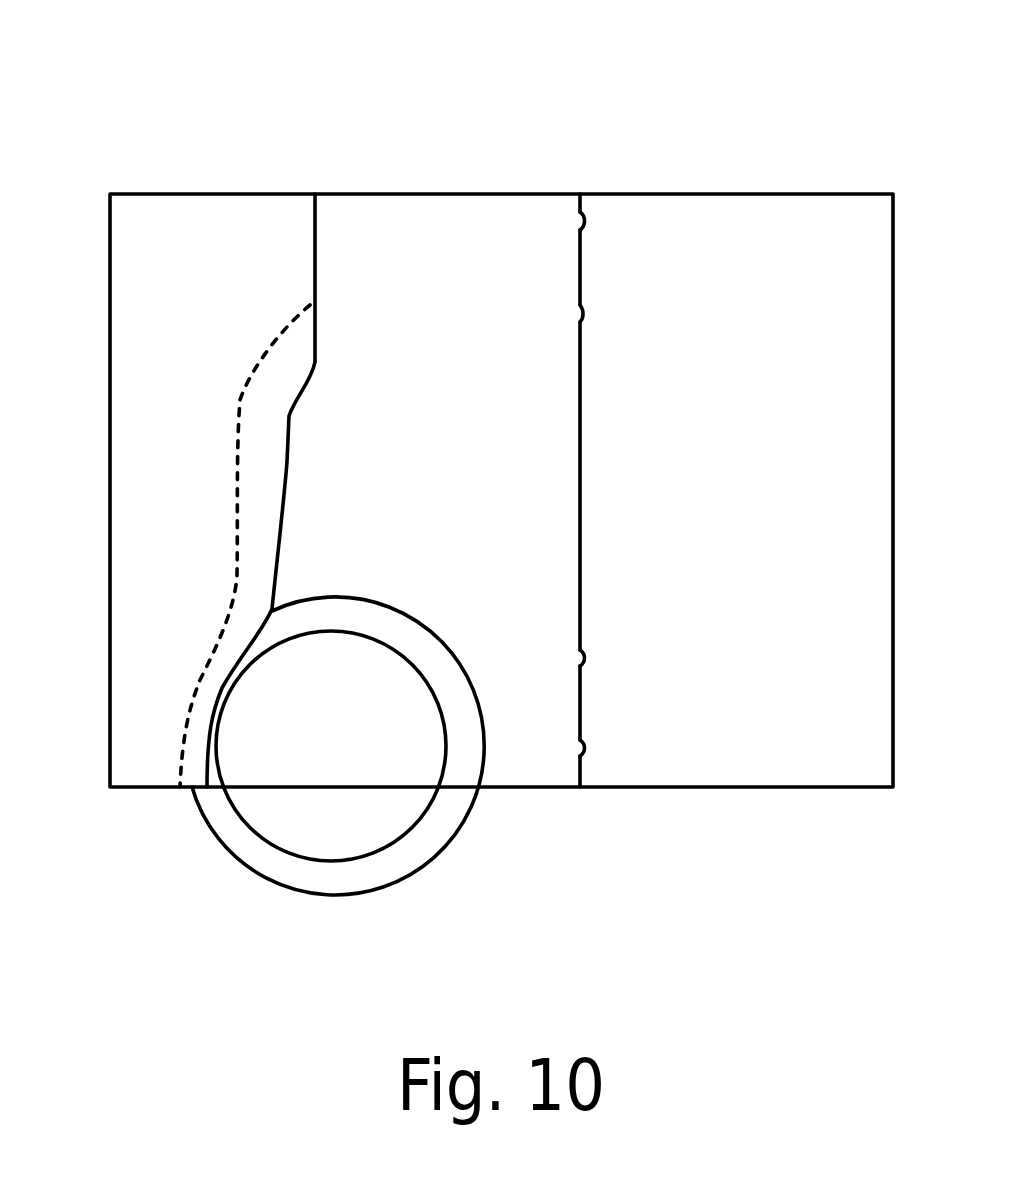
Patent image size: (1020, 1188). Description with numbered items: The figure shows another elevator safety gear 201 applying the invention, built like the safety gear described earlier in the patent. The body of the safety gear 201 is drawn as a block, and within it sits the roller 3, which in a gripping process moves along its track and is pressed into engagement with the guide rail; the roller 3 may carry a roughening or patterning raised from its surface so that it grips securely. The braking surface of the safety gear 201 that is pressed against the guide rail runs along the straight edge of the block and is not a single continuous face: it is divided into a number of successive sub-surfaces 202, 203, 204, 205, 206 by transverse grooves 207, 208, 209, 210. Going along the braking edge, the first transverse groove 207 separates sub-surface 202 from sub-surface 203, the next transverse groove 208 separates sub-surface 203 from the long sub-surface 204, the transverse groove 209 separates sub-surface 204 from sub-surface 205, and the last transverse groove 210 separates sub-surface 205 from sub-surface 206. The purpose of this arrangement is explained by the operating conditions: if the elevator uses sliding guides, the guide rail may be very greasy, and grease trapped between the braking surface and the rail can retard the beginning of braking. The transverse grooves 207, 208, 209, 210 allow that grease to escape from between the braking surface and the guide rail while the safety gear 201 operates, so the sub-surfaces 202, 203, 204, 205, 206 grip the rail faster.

The roller 3 is at (312, 776).
The safety gear 201 is at (390, 285).
The sub-surface 202 is at (583, 204).
The sub-surface 203 is at (580, 272).
The sub-surface 204 is at (583, 492).
The sub-surface 205 is at (585, 700).
The sub-surface 206 is at (586, 778).
The transverse groove 207 is at (578, 222).
The transverse groove 208 is at (570, 318).
The transverse groove 209 is at (582, 668).
The transverse groove 210 is at (583, 758).